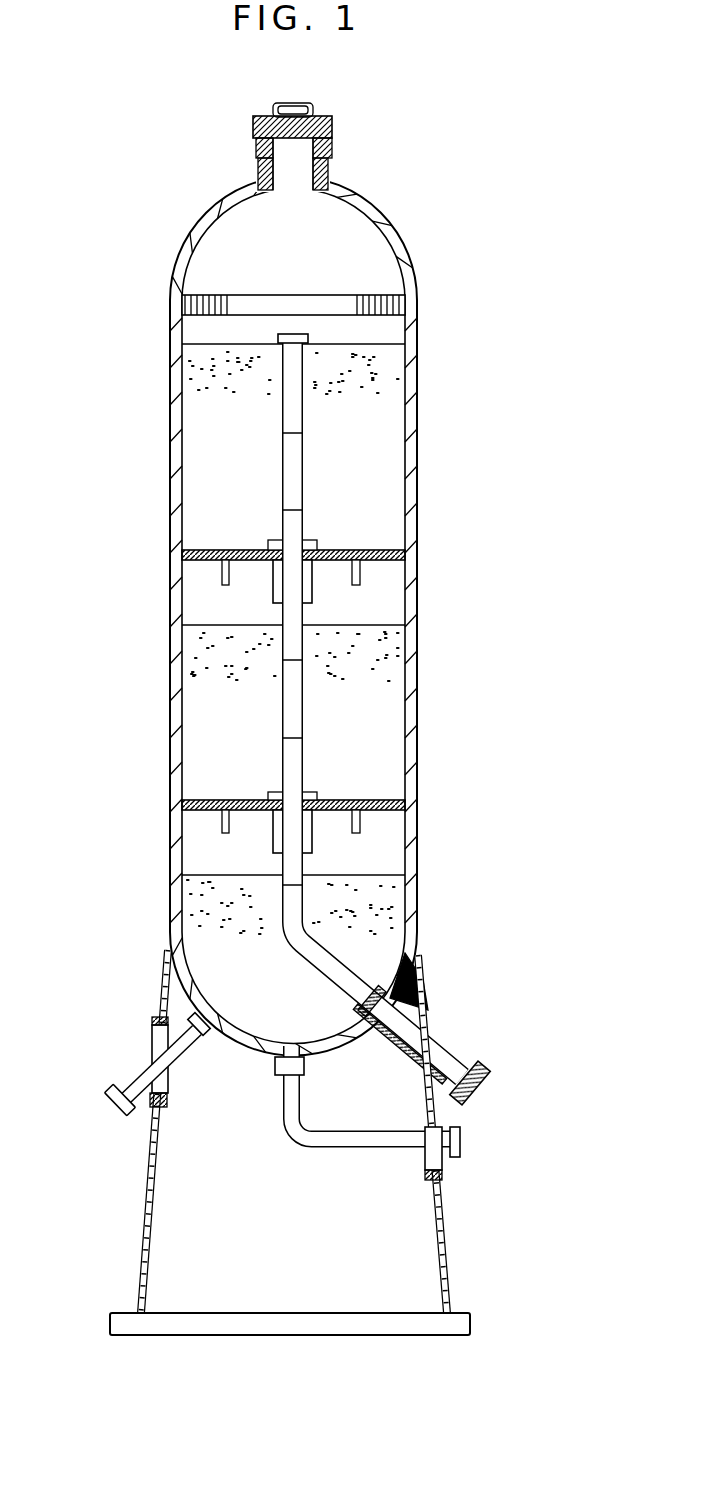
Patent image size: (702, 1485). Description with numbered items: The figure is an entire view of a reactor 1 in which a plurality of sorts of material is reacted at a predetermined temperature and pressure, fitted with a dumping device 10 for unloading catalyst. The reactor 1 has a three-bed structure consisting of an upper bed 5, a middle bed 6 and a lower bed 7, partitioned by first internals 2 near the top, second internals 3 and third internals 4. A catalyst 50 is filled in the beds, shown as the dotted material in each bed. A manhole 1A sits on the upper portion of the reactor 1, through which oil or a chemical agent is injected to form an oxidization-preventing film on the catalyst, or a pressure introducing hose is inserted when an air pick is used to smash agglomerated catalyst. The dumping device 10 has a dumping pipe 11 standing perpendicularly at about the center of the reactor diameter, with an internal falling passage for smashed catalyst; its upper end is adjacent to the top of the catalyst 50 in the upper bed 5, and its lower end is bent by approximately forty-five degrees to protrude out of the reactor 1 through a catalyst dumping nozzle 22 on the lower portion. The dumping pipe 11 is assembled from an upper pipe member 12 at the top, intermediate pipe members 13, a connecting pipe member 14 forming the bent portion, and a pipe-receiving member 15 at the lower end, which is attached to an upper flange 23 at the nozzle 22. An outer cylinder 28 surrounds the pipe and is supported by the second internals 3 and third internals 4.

The reactor 1 is at (418, 208).
The manhole 1A is at (332, 133).
The first internals 2 is at (405, 318).
The second internals 3 is at (385, 552).
The third internals 4 is at (383, 800).
The upper bed 5 is at (211, 468).
The middle bed 6 is at (200, 713).
The lower bed 7 is at (204, 934).
The dumping device 10 is at (322, 332).
The dumping pipe 11 is at (303, 487).
The upper pipe member 12 is at (298, 410).
The intermediate pipe member 13 is at (293, 697).
The connecting pipe member 14 is at (295, 938).
The pipe-receiving member 15 is at (460, 1053).
The catalyst dumping nozzle 22 is at (440, 1033).
The upper flange 23 is at (467, 1103).
The outer cylinder 28 is at (273, 588).
The catalyst 50 is at (377, 368).